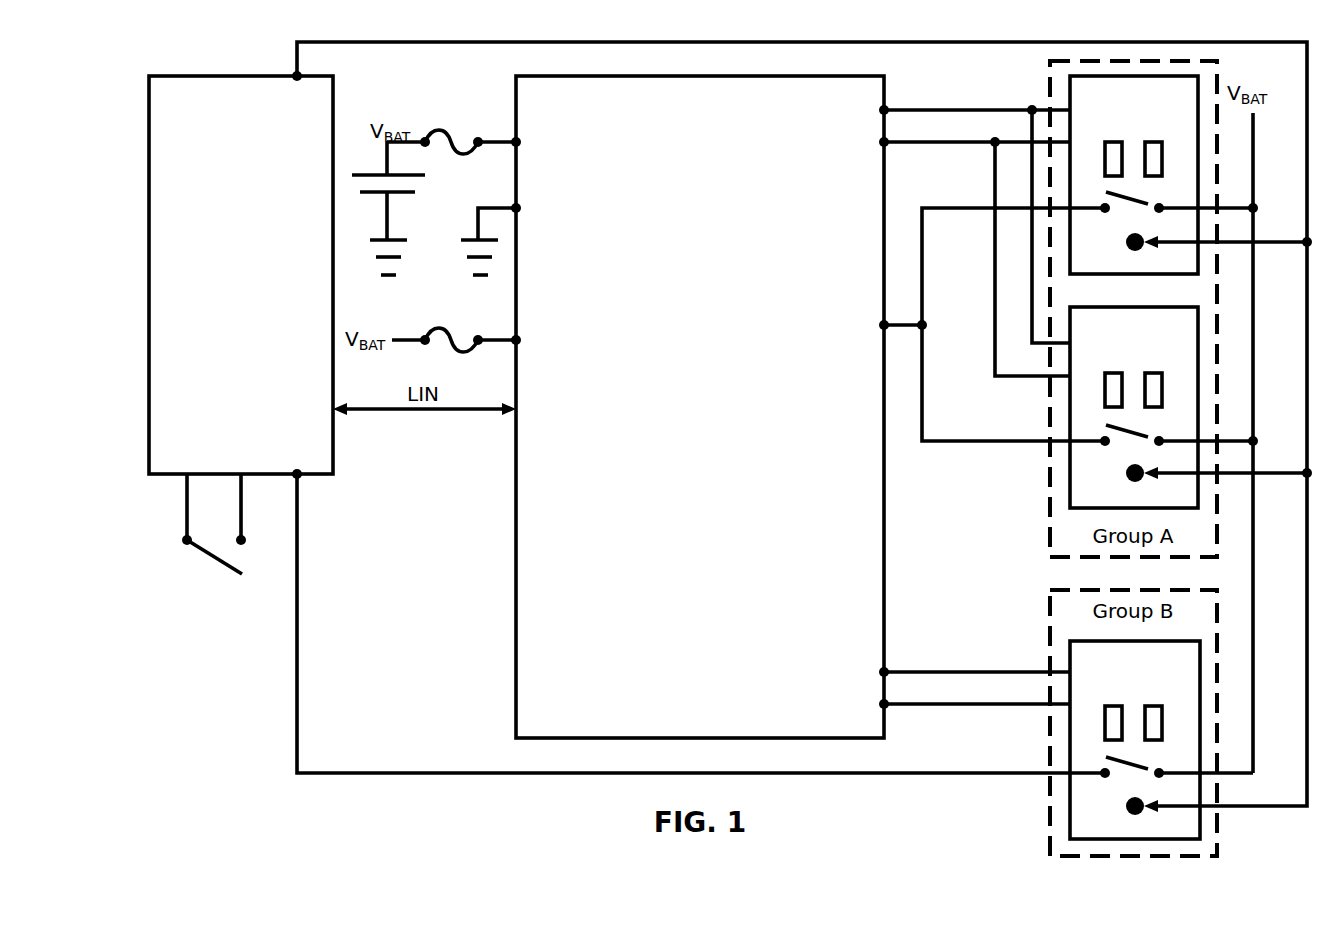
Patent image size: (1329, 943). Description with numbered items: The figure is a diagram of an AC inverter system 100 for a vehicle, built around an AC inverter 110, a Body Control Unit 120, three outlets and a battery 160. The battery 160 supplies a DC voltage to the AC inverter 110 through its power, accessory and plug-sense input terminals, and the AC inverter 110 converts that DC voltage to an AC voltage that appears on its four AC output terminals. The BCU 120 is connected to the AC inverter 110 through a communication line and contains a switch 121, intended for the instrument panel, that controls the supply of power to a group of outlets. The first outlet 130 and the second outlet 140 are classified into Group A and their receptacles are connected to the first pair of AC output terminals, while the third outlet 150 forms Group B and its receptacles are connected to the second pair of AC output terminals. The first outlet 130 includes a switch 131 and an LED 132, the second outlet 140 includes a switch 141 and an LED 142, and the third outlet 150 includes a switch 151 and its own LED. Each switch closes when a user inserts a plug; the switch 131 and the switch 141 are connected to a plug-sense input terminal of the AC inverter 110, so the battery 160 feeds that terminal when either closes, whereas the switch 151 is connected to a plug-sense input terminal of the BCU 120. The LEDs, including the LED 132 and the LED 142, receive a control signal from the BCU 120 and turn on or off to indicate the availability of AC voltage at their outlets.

The AC inverter system 100 is at (272, 42).
The AC inverter 110 is at (514, 110).
The Body Control Unit (BCU) 120 is at (235, 75).
The switch 121 is at (208, 556).
The outlet 1 130 is at (1068, 93).
The switch 131 is at (1135, 202).
The light-emitting diode (LED) 132 is at (1142, 246).
The outlet 2 140 is at (1068, 492).
The switch 141 is at (1135, 434).
The LED 142 is at (1142, 477).
The outlet 3 150 is at (1068, 658).
The switch 151 is at (1135, 765).
The battery 160 is at (383, 191).